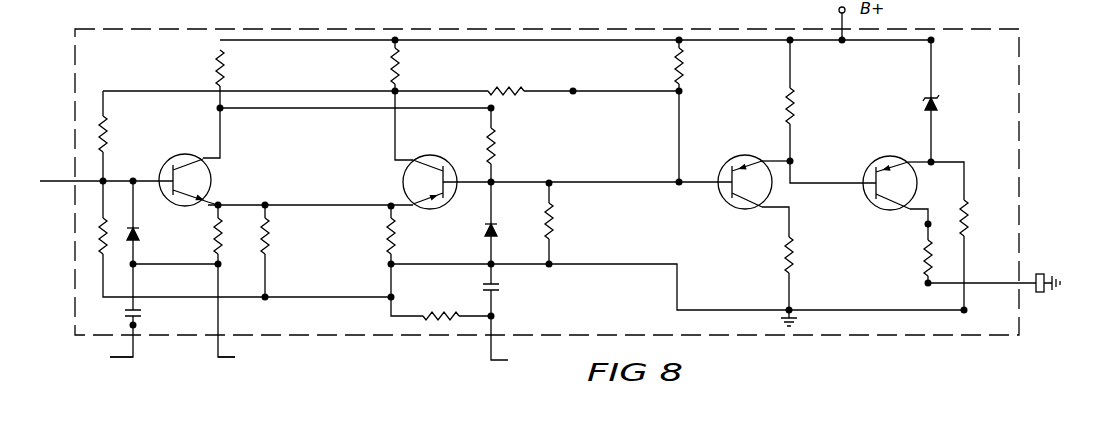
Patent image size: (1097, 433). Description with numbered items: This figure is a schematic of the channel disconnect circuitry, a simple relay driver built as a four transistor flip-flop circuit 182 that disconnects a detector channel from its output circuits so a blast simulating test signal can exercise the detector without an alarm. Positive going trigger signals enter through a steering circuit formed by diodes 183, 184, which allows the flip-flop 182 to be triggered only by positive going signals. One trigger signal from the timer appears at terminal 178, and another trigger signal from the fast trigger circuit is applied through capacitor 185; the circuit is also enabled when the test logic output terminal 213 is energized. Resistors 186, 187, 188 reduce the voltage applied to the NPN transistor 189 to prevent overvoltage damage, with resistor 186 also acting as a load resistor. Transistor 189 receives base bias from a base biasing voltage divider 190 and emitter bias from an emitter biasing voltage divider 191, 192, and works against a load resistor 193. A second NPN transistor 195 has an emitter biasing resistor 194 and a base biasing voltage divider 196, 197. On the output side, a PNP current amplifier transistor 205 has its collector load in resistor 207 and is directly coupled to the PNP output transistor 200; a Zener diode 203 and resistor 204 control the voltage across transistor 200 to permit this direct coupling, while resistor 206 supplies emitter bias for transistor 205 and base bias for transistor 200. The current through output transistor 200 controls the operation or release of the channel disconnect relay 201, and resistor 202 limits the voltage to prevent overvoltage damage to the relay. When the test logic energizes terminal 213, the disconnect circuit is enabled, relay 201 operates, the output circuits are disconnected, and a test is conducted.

The four transistor flip-flop circuit 182 is at (605, 14).
The terminal 178 is at (246, 359).
The diode 183 is at (147, 226).
The diode 184 is at (486, 235).
The capacitor 185 is at (141, 319).
The resistor 186 is at (402, 71).
The resistor 187 is at (505, 86).
The resistor 188 is at (686, 71).
The NPN transistor 189 is at (213, 182).
The base biasing voltage divider 190 is at (110, 136).
The emitter biasing voltage divider 191 is at (213, 236).
The emitter biasing voltage divider 192 is at (271, 251).
The load resistor 193 is at (227, 70).
The emitter biasing resistor 194 is at (398, 240).
The NPN transistor 195 is at (401, 181).
The base biasing voltage divider 196 is at (503, 139).
The base biasing voltage divider 197 is at (556, 229).
The output transistor 200 is at (867, 212).
The channel disconnect relay 201 is at (1041, 302).
The resistor 202 is at (917, 250).
The Zener diode 203 is at (939, 106).
The resistor 204 is at (970, 216).
The transistor 205 is at (729, 212).
The resistor 206 is at (797, 106).
The resistor 207 is at (779, 250).
The output terminal 213 is at (98, 359).